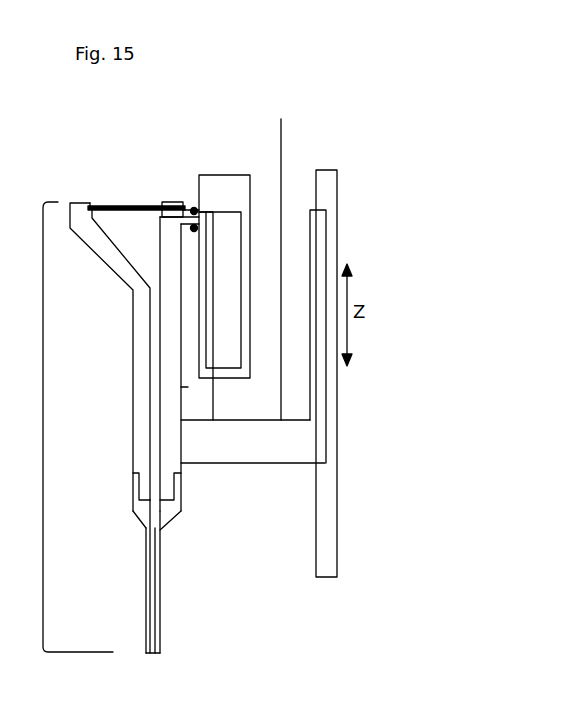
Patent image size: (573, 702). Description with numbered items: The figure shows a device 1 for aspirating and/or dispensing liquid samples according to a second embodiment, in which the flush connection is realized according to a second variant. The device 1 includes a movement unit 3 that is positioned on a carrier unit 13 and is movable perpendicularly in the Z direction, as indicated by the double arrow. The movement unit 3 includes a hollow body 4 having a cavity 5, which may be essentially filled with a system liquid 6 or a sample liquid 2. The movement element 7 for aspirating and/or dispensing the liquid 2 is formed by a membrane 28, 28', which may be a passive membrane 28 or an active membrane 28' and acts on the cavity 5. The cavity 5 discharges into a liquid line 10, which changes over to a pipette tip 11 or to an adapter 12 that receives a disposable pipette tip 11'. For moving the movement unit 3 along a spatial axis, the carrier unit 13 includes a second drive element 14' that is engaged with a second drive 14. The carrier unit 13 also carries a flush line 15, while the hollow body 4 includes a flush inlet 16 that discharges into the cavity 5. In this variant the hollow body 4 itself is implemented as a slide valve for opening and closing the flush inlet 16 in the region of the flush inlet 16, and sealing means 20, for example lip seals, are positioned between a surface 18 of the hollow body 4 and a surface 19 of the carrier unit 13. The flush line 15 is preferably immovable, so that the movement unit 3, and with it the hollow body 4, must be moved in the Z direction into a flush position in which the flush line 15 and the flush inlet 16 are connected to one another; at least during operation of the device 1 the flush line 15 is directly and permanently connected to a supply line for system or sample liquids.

The device 1 is at (390, 132).
The liquid 2 is at (157, 640).
The movement unit 3 is at (56, 427).
The hollow body 4 is at (115, 258).
The cavity 5 is at (116, 355).
The system liquid 6 is at (142, 253).
The movement element 7 is at (128, 206).
The liquid line 10 is at (152, 343).
The pipette tip 11 is at (101, 637).
The disposable pipette tip 11' is at (101, 637).
The adapter 12 is at (140, 457).
The carrier unit 13 is at (238, 195).
The second drive 14 is at (283, 253).
The second drive element 14' is at (253, 441).
The flush line 15 is at (209, 272).
The flush inlet 16 is at (177, 202).
The surface of the hollow body 18 is at (190, 393).
The surface of the carrier unit 19 is at (192, 355).
The sealing means 20 is at (194, 207).
The passive membrane 28 is at (74, 176).
The active membrane 28' is at (74, 176).